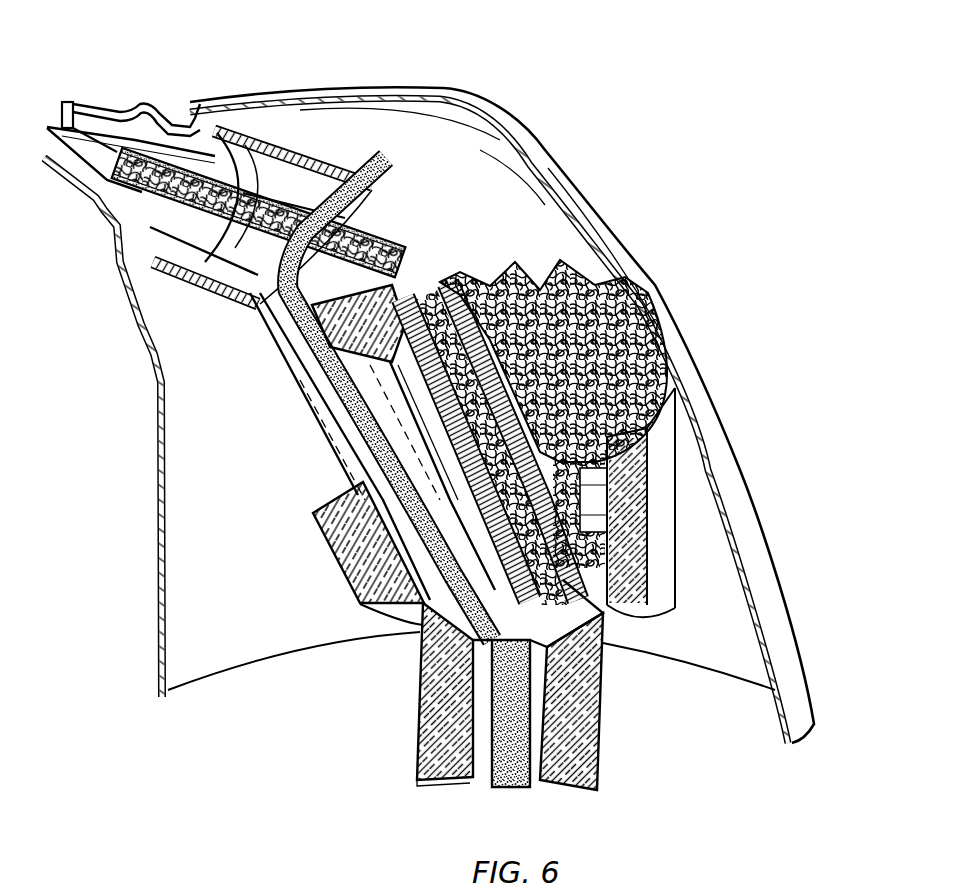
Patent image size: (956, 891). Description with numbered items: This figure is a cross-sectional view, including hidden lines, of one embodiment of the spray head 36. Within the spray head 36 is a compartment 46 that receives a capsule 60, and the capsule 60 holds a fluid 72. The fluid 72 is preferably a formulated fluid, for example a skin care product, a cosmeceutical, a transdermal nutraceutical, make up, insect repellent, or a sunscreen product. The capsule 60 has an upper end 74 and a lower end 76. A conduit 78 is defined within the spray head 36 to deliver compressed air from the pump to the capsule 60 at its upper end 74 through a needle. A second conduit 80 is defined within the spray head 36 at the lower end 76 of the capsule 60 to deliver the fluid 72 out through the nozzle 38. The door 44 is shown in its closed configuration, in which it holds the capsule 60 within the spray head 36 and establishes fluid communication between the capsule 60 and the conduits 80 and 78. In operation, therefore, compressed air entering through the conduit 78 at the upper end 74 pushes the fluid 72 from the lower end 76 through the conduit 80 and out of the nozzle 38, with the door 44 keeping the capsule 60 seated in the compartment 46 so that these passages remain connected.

The spray head 36 is at (155, 463).
The nozzle 38 is at (78, 114).
The door 44 is at (562, 168).
The compartment 46 is at (472, 140).
The capsule 60 is at (487, 150).
The fluid 72 is at (627, 307).
The upper end 74 is at (390, 143).
The lower end 76 is at (605, 500).
The conduit 78 is at (413, 500).
The conduit 80 is at (714, 450).